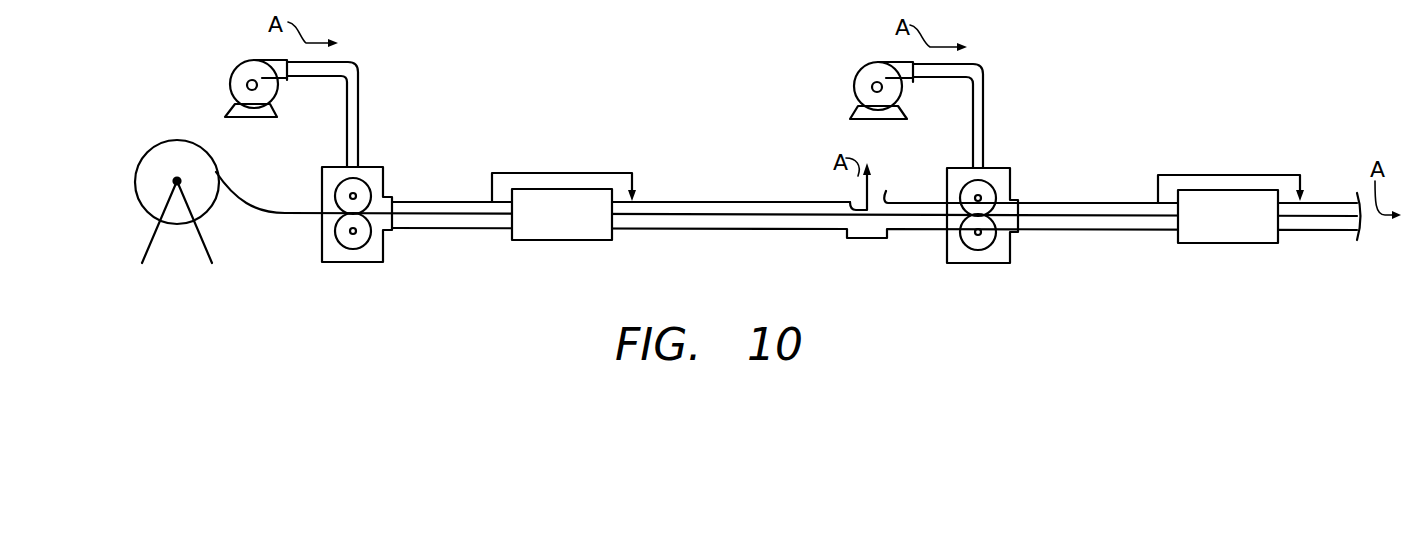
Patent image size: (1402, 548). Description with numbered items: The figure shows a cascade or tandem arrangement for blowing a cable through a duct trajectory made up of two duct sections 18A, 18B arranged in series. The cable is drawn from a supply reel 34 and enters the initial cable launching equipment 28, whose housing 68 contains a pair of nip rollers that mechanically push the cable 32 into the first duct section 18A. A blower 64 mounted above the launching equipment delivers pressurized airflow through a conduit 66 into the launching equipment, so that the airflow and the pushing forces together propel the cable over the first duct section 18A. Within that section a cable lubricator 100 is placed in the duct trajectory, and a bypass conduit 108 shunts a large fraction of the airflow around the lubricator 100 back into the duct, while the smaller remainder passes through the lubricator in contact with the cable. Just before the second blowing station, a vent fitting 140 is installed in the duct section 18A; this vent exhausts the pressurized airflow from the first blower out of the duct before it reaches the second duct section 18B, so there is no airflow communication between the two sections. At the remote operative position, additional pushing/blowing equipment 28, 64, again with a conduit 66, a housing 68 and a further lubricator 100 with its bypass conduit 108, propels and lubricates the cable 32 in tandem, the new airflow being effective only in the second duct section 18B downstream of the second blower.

The supply roll of web material 34 is at (177, 140).
The blowing equipment 64 is at (233, 72).
The air conduit 66 is at (360, 92).
The cable launching equipment 28 is at (325, 151).
The roller housing 68 is at (328, 242).
The web 32 is at (436, 212).
The bypass conduit 108 is at (542, 173).
The cable lubricator 100 is at (540, 227).
The first duct section 18A is at (734, 193).
The second duct section 18B is at (1323, 234).
The vent fitting 140 is at (848, 198).